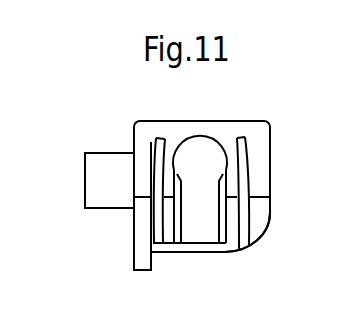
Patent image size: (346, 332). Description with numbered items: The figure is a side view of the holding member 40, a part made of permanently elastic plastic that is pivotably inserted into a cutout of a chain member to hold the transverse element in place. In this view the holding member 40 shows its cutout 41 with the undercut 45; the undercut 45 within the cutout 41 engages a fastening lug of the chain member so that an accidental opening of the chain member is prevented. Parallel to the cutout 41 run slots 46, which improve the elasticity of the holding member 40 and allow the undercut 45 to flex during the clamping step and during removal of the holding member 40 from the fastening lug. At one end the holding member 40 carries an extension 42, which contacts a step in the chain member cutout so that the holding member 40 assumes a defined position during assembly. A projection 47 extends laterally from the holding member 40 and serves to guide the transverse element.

The holding member 40 is at (255, 112).
The cutout 41 is at (213, 228).
The extension 42 is at (141, 263).
The undercut 45 is at (185, 235).
The slots 46 is at (243, 181).
The projections 47 is at (112, 162).